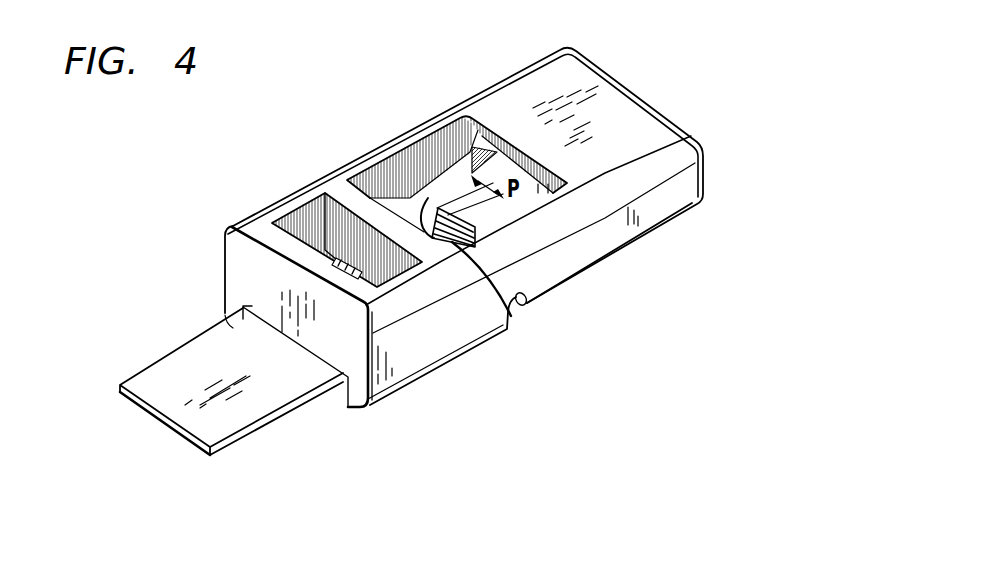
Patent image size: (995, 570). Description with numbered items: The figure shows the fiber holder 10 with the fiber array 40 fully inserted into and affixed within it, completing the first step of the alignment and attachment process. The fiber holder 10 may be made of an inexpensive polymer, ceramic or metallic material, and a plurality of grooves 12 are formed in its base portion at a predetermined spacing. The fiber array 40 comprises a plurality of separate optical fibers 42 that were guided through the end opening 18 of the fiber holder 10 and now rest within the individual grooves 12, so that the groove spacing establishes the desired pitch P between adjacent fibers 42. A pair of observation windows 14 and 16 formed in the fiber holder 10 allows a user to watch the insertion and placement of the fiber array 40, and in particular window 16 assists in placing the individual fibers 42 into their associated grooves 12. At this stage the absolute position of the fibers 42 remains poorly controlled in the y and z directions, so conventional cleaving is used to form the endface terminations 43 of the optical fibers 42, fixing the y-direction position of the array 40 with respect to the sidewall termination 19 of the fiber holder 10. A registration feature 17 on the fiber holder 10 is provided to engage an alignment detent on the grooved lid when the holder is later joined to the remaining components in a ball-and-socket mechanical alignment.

The fiber holder 10 is at (624, 64).
The grooves 12 is at (511, 316).
The observation window 14 is at (297, 237).
The observation window 16 is at (440, 167).
The registration feature 17 is at (416, 206).
The end opening 18 is at (262, 329).
The sidewall termination 19 is at (707, 179).
The fiber array 40 is at (166, 372).
The optical fibers 42 is at (437, 204).
The endface terminations 43 is at (443, 224).